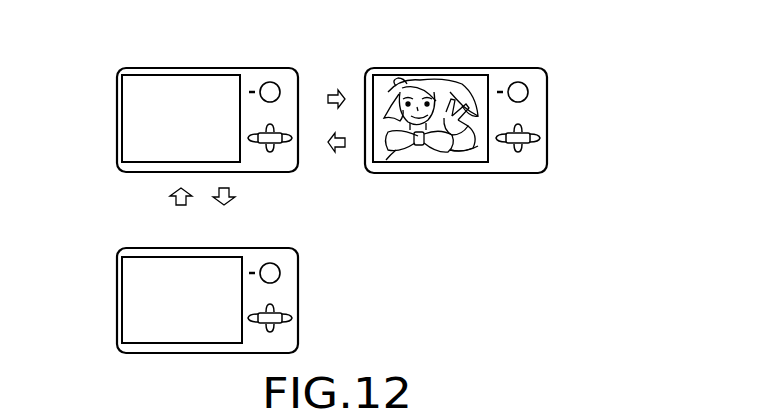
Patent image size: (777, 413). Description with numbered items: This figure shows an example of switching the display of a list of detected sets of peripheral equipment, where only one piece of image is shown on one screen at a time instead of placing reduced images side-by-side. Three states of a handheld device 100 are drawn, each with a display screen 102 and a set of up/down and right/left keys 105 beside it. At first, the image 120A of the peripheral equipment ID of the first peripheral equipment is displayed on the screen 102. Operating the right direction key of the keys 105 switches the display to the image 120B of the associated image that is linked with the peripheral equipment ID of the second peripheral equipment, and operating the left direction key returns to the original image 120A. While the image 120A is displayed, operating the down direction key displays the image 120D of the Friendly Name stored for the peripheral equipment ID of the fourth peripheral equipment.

The portable terminal device 100 is at (278, 68).
The display screen 102 is at (122, 132).
The up/down and right/left keys 105 is at (280, 148).
The image of the peripheral equipment ID 120A is at (196, 80).
The image of the associated image 120B is at (447, 80).
The image of the Friendly Name 120D is at (130, 260).